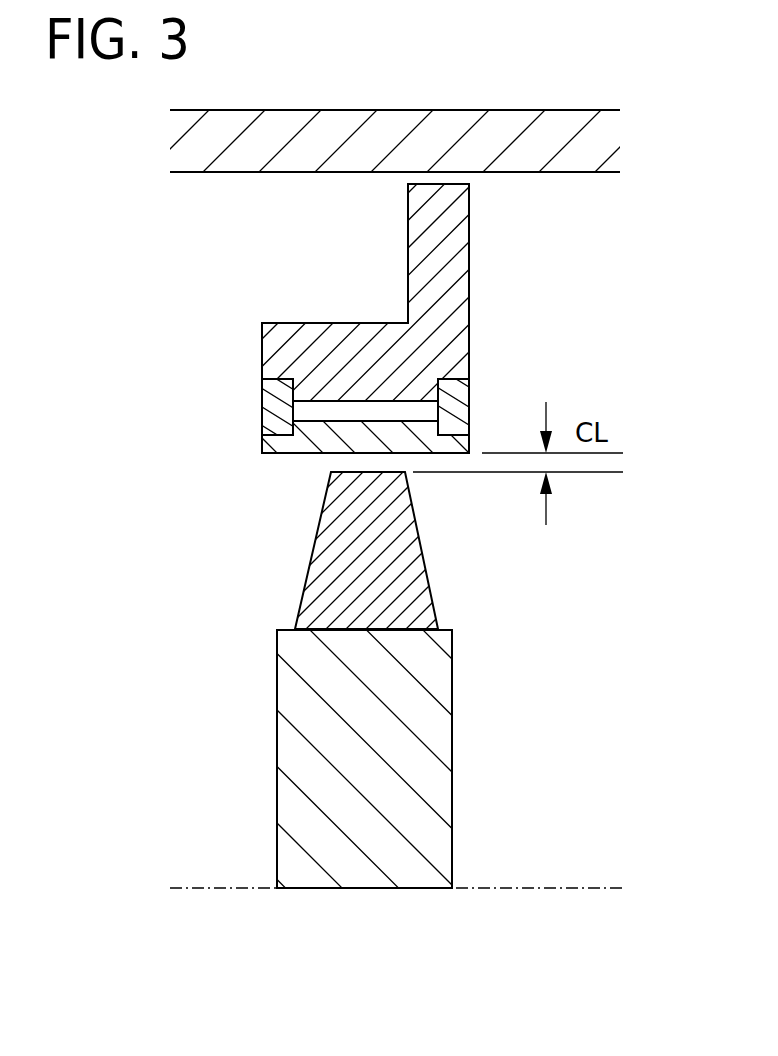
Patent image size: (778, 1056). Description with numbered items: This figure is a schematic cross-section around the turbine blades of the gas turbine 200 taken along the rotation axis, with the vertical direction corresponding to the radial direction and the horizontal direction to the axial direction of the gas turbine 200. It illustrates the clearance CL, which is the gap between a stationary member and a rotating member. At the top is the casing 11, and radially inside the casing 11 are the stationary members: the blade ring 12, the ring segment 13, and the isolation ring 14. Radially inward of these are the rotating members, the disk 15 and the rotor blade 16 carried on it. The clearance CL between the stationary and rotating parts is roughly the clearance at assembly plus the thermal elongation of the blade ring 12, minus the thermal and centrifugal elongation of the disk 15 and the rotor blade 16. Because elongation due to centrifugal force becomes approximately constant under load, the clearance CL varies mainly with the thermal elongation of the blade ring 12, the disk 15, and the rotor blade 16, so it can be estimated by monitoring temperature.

The casing 11 is at (230, 172).
The blade ring 12 is at (470, 298).
The ring segment 13 is at (470, 393).
The isolation ring 14 is at (262, 443).
The disk 15 is at (318, 553).
The rotor blade 16 is at (288, 697).
The gas turbine 200 is at (722, 627).